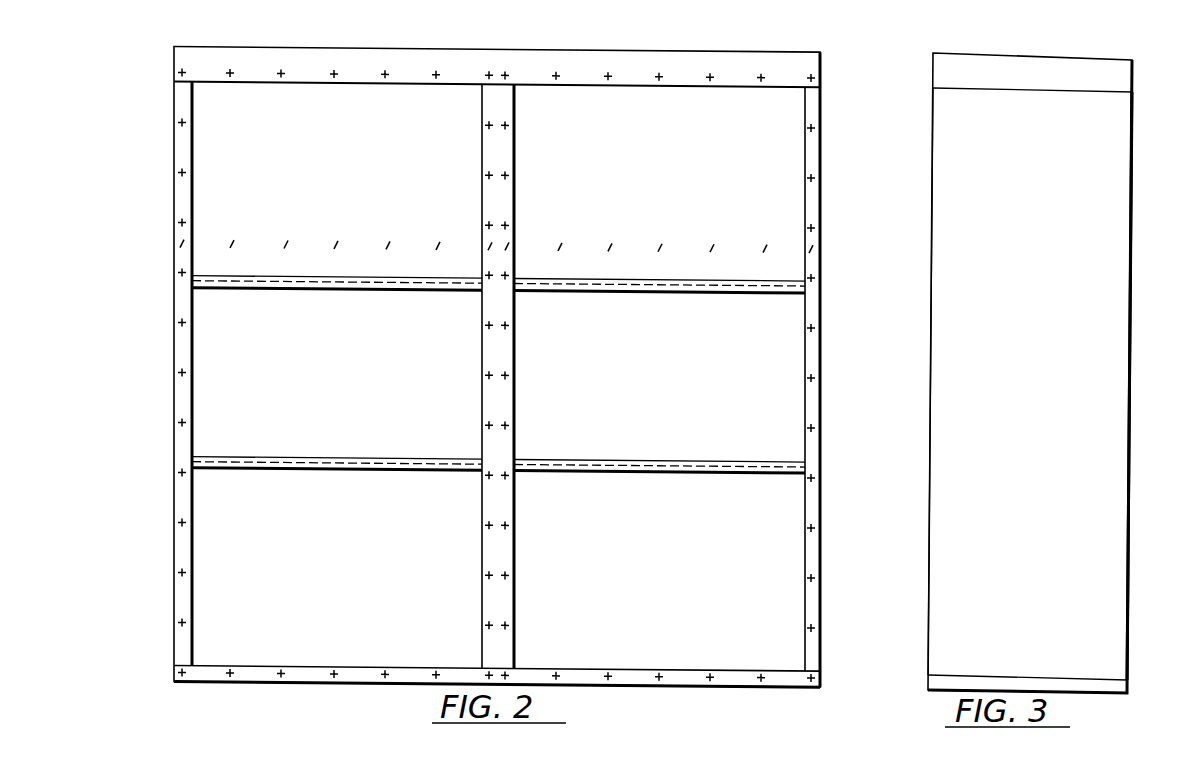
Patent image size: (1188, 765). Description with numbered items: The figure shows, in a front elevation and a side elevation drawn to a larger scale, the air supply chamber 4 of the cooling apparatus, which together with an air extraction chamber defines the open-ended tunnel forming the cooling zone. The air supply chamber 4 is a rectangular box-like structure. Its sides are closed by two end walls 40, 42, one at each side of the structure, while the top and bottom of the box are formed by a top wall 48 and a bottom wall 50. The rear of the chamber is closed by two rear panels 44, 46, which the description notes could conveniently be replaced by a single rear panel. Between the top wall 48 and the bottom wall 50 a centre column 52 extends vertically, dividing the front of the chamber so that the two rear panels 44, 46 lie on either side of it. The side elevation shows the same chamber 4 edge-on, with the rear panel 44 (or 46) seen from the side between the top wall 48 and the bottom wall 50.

In FIG. 2, the air supply chamber 4 is at (166, 536).
In FIG. 3, the air supply chamber 4 is at (1138, 330).
In FIG. 2, the end wall 40 is at (180, 206).
In FIG. 2, the end wall 42 is at (816, 209).
In FIG. 2, the rear panel 44 is at (356, 349).
In FIG. 3, the rear panel 44 is at (930, 421).
In FIG. 2, the rear panel 46 is at (672, 349).
In FIG. 3, the rear panel 46 is at (994, 386).
In FIG. 2, the top wall 48 is at (380, 52).
In FIG. 3, the top wall 48 is at (1040, 68).
In FIG. 2, the bottom wall 50 is at (266, 672).
In FIG. 3, the bottom wall 50 is at (938, 679).
In FIG. 2, the centre column 52 is at (502, 336).